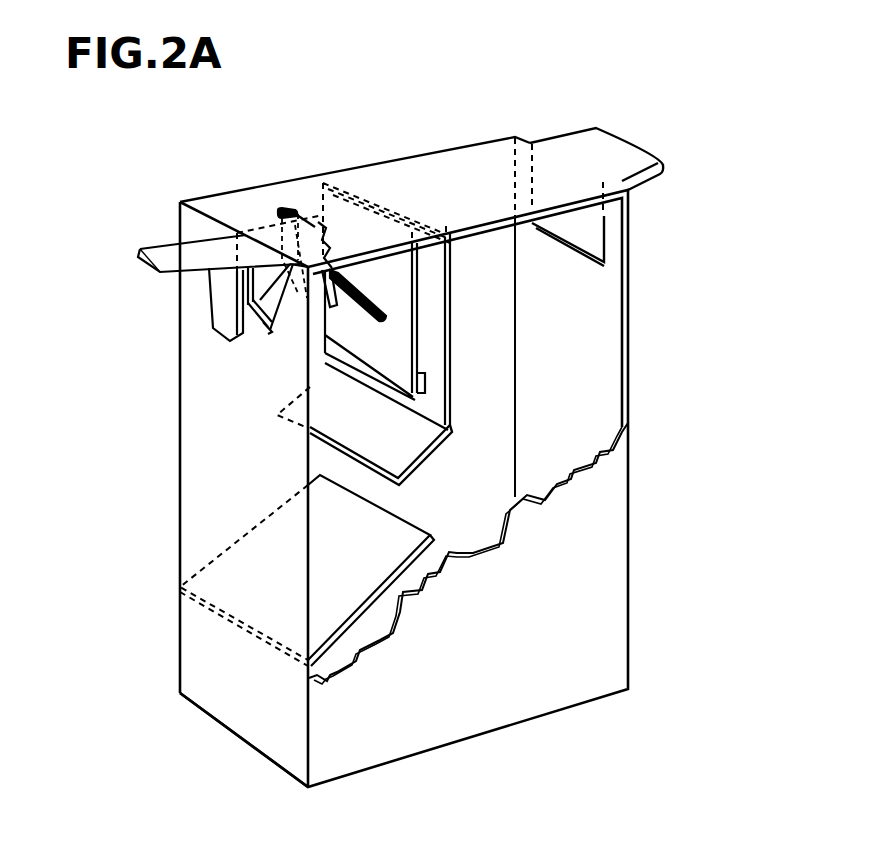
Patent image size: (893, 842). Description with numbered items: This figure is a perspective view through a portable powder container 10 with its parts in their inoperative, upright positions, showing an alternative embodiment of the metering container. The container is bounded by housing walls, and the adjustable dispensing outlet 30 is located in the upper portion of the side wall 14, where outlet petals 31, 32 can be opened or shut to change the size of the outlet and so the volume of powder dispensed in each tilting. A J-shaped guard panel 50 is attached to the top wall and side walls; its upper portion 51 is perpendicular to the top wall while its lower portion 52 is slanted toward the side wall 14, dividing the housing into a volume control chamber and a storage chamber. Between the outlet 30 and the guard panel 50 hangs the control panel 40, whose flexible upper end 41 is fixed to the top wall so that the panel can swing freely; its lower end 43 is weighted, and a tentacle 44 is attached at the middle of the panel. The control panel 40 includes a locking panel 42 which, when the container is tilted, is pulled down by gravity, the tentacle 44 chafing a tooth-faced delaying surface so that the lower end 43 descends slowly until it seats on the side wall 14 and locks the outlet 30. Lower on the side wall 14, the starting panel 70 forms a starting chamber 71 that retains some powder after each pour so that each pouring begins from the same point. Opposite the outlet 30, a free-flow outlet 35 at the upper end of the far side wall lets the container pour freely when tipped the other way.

The portable powder container 10 is at (638, 620).
The side wall 14 is at (257, 448).
The adjustable dispensing outlet 30 is at (335, 292).
The outlet petal 31 is at (170, 243).
The outlet petal 32 is at (208, 283).
The free-flow outlet 35 is at (588, 230).
The control panel 40 is at (345, 220).
The upper end of control panel 41 is at (296, 213).
The locking panel 42 is at (392, 297).
The lower end of control panel 43 is at (337, 348).
The tentacle 44 is at (350, 300).
The guard panel 50 is at (452, 363).
The upper portion of guard panel 51 is at (430, 328).
The lower portion of guard panel 52 is at (413, 440).
The starting panel 70 is at (243, 590).
The starting chamber 71 is at (213, 522).